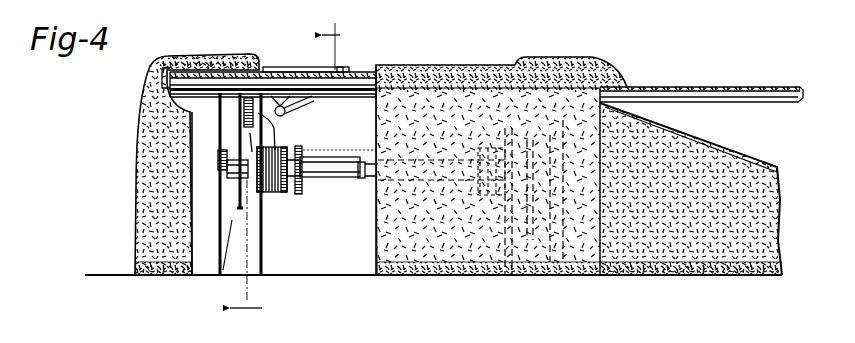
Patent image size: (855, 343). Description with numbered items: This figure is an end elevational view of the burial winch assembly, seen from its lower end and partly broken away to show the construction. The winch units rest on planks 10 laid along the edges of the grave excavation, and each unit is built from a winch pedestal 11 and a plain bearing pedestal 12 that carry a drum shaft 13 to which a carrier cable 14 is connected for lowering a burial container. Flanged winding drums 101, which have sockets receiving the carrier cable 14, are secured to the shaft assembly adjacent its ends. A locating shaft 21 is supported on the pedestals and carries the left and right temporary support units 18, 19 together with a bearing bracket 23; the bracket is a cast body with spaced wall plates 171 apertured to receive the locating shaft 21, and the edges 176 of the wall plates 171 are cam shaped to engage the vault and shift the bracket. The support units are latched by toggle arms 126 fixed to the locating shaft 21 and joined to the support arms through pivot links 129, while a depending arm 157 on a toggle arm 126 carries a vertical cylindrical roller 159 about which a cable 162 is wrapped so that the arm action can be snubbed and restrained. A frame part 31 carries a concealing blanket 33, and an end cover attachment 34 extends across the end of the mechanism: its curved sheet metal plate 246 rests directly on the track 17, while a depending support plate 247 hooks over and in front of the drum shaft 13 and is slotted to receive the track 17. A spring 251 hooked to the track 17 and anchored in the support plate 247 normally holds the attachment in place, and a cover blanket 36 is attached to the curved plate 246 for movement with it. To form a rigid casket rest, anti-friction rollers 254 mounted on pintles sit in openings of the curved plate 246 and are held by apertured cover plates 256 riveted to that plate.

The planks 10 is at (205, 284).
The winch pedestal 11 is at (543, 277).
The plain bearing pedestal 12 is at (200, 272).
The drum shaft 13 is at (312, 183).
The carrier cable 14 is at (262, 256).
The track 17 is at (760, 88).
The left temporary support unit 18 is at (291, 110).
The right temporary support unit 19 is at (483, 229).
The locating shaft 21 is at (295, 175).
The bearing bracket 23 is at (226, 245).
The frame part 31 is at (193, 70).
The concealing blanket 33 is at (137, 142).
The end cover attachment 34 is at (376, 70).
The cover blanket 36 is at (428, 278).
The flanged winding drum 101 is at (300, 186).
The arm 126 is at (330, 116).
The pivot link 129 is at (306, 106).
The depending arm 157 is at (278, 139).
The cylindrical roller 159 is at (300, 150).
The cable 162 is at (372, 157).
The wall plate 171 is at (228, 207).
The cam shaped edge 176 is at (232, 223).
The curved sheet metal plate 246 is at (258, 62).
The support plate 247 is at (223, 123).
The spring 251 is at (243, 103).
The anti-friction roller 254 is at (292, 67).
The cover plate 256 is at (342, 68).